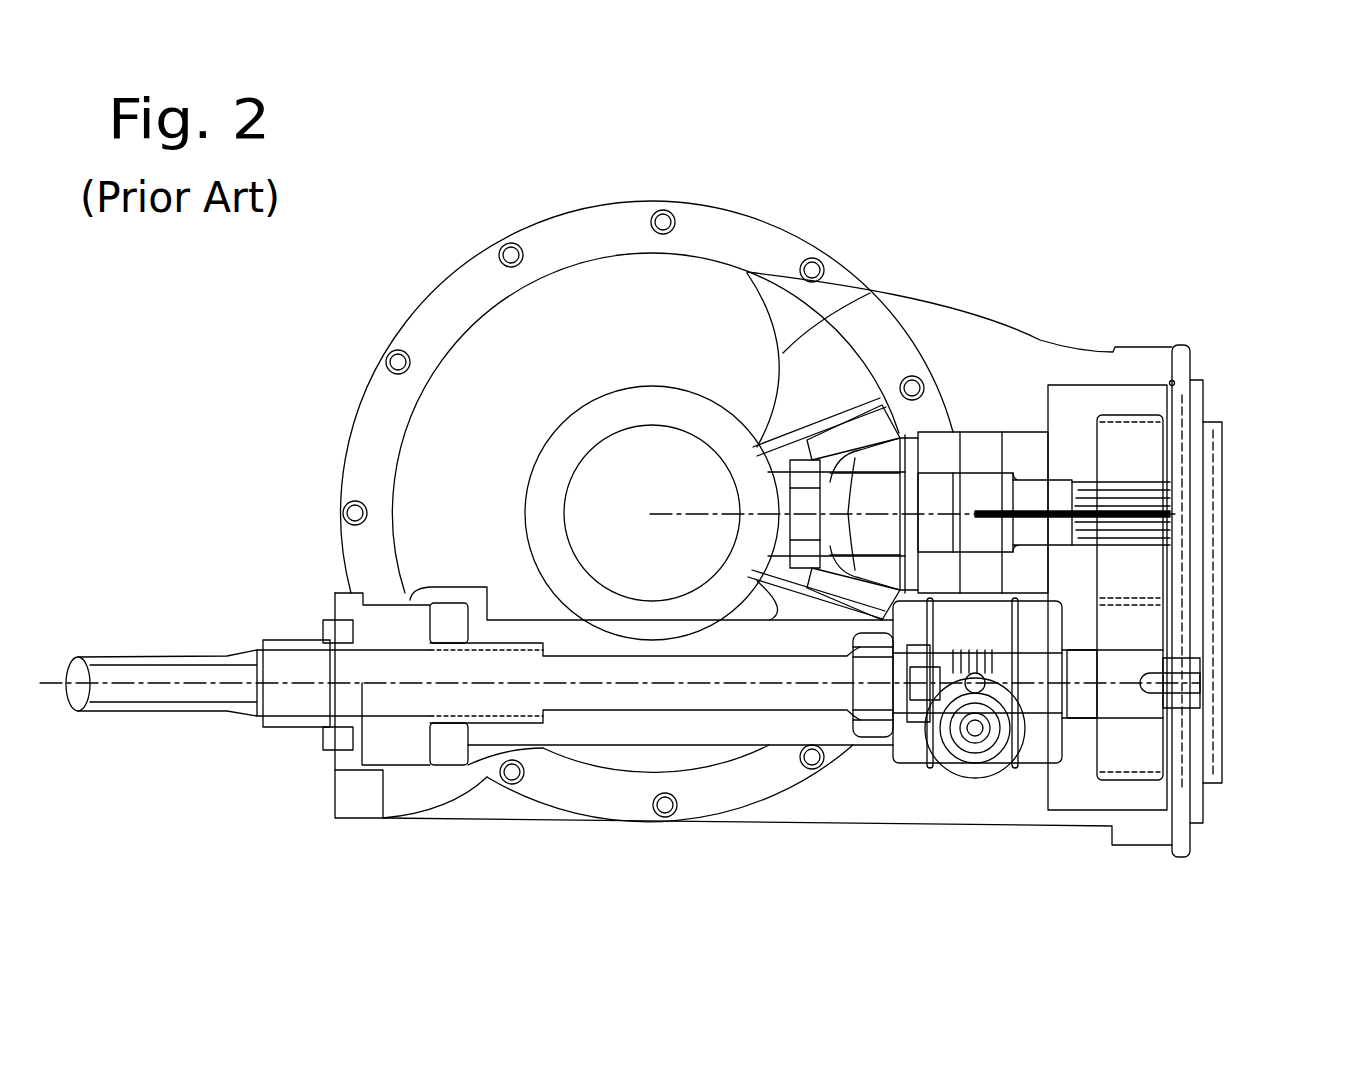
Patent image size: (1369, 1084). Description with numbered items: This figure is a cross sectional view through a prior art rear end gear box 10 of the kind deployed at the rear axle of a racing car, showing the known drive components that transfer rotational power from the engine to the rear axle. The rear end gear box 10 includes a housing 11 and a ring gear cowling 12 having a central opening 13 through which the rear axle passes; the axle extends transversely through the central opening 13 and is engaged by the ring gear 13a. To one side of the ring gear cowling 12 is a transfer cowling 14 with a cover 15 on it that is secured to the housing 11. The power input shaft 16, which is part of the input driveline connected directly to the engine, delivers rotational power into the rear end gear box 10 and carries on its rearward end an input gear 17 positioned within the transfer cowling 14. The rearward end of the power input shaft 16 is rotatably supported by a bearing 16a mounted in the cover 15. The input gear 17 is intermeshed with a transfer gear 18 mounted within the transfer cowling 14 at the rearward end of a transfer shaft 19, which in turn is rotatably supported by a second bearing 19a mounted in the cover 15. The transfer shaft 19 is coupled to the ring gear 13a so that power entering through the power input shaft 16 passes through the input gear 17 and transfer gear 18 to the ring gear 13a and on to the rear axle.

The rear end gear box 10 is at (972, 148).
The housing 11 is at (945, 345).
The ring gear cowling 12 is at (565, 205).
The central opening 13 is at (628, 447).
The ring gear 13a is at (785, 352).
The transfer cowling 14 is at (1135, 385).
The cover 15 is at (1207, 398).
The power input shaft 16 is at (586, 712).
The bearing 16a is at (1213, 647).
The input gear 17 is at (1148, 738).
The transfer gear 18 is at (1142, 570).
The transfer shaft 19 is at (982, 443).
The second bearing 19a is at (1217, 476).